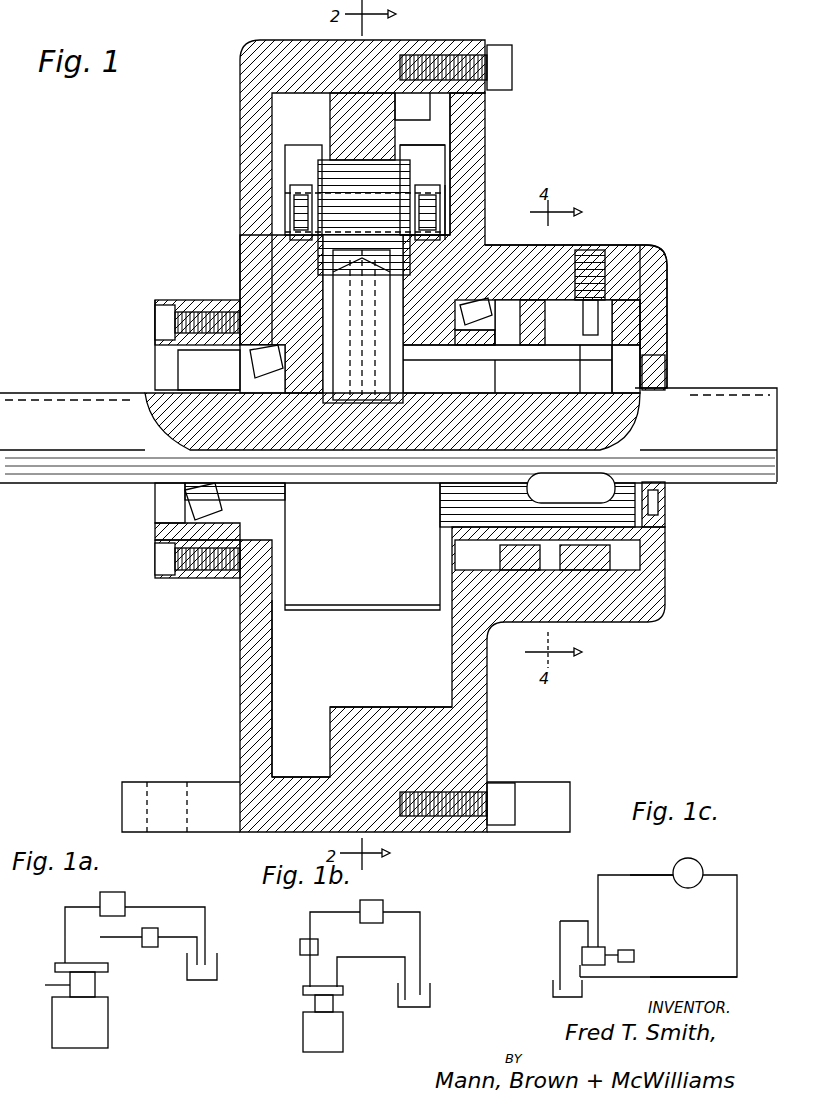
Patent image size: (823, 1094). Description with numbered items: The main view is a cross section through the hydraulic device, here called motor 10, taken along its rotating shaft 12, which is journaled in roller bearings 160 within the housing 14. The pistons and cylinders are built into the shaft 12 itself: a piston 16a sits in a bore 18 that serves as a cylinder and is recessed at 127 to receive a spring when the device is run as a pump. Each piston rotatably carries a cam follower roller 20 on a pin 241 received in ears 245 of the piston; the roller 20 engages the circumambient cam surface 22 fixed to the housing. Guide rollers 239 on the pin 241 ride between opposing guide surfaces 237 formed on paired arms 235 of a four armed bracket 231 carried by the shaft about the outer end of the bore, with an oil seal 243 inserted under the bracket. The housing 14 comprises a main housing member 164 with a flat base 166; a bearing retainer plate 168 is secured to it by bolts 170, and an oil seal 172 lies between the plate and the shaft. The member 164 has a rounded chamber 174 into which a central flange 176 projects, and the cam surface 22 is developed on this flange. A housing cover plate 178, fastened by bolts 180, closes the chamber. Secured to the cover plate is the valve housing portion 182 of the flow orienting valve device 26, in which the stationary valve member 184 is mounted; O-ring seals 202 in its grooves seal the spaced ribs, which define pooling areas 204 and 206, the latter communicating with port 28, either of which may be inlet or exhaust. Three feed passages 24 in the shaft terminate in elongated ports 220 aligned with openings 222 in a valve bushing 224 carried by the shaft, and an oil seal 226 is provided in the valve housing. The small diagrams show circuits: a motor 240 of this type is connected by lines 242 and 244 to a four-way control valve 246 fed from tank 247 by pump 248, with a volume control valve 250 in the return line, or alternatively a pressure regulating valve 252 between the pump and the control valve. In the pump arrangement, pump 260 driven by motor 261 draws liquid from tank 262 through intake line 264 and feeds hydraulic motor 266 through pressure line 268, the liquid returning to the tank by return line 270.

In FIG. 1, the motor 10 is at (242, 38).
In FIG. 1, the rotating shaft 12 is at (135, 374).
In FIG. 1, the housing 14 is at (240, 100).
In FIG. 1, the piston 16a is at (282, 318).
In FIG. 1, the bore 18 is at (330, 390).
In FIG. 1, the cam follower roller 20 is at (362, 178).
In FIG. 1, the cam surface 22 is at (362, 707).
In FIG. 1, the feed passage 24 is at (468, 380).
In FIG. 1, the hydraulic liquid flow orienting valve device 26 is at (660, 312).
In FIG. 1, the port 28 is at (568, 264).
In FIG. 1, the recess 127 is at (372, 435).
In FIG. 1, the roller bearings 160 is at (475, 295).
In FIG. 1, the main housing member 164 is at (250, 660).
In FIG. 1, the flat base 166 is at (122, 800).
In FIG. 1, the bearing retainer plate 168 is at (170, 522).
In FIG. 1, the bolts 170 is at (160, 560).
In FIG. 1, the oil seal 172 is at (140, 512).
In FIG. 1, the rounded chamber 174 is at (272, 695).
In FIG. 1, the flange 176 is at (330, 743).
In FIG. 1, the housing cover plate 178 is at (430, 183).
In FIG. 1, the bolts 180 is at (505, 65).
In FIG. 1, the valve housing portion 182 is at (648, 252).
In FIG. 1, the valve member 184 is at (632, 322).
In FIG. 1, the O-ring seals 202 is at (667, 262).
In FIG. 1, the pooling area 204 is at (545, 300).
In FIG. 1, the pooling area 206 is at (595, 300).
In FIG. 1, the elongated ports 220 is at (545, 358).
In FIG. 1, the openings 222 is at (595, 350).
In FIG. 1, the valve bushing 224 is at (630, 343).
In FIG. 1, the oil seal 226 is at (678, 517).
In FIG. 1, the four armed bracket 231 is at (470, 290).
In FIG. 1, the arms 235 is at (465, 135).
In FIG. 1, the guide surfaces 237 is at (420, 155).
In FIG. 1, the guide rollers 239 is at (430, 230).
In FIG. 1, the pin 241 is at (438, 243).
In FIG. 1, the oil seal 243 is at (328, 312).
In FIG. 1, the ears 245 is at (295, 190).
In FIG. 1A, the motor 240 is at (97, 1030).
In FIG. 1A, the line 242 is at (95, 988).
In FIG. 1A, the line 244 is at (37, 985).
In FIG. 1B, the line 244 is at (315, 1003).
In FIG. 1A, the four-way control valve 246 is at (55, 965).
In FIG. 1B, the four-way control valve 246 is at (343, 992).
In FIG. 1A, the tank 247 is at (202, 982).
In FIG. 1B, the tank 247 is at (414, 1008).
In FIG. 1A, the pump 248 is at (125, 900).
In FIG. 1B, the pump 248 is at (383, 905).
In FIG. 1A, the hydraulic liquid volume control valve 250 is at (150, 947).
In FIG. 1B, the pressure regulating valve 252 is at (300, 945).
In FIG. 1C, the pump 260 is at (588, 957).
In FIG. 1C, the motor 261 is at (632, 948).
In FIG. 1C, the tank 262 is at (560, 997).
In FIG. 1C, the intake line 264 is at (560, 954).
In FIG. 1C, the hydraulic motor 266 is at (702, 862).
In FIG. 1C, the pressure line 268 is at (658, 873).
In FIG. 1C, the return line 270 is at (703, 977).